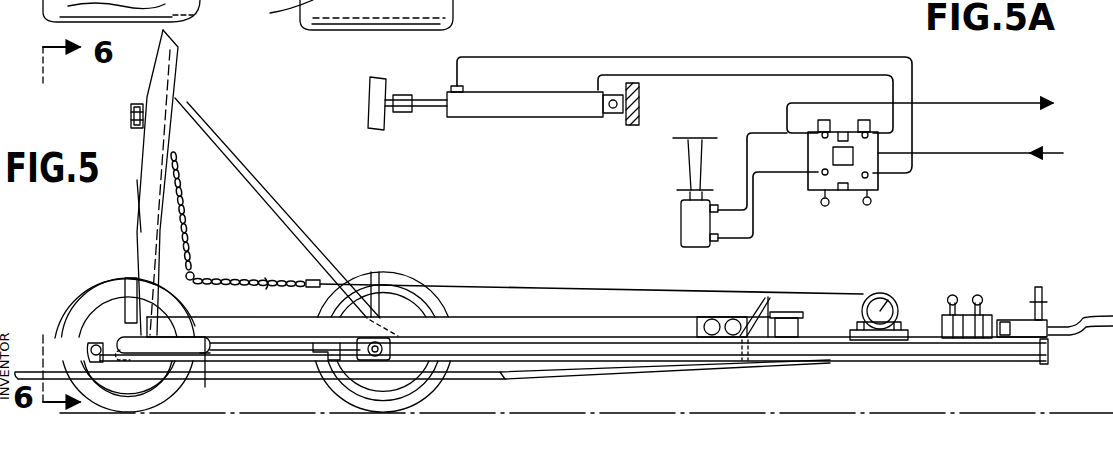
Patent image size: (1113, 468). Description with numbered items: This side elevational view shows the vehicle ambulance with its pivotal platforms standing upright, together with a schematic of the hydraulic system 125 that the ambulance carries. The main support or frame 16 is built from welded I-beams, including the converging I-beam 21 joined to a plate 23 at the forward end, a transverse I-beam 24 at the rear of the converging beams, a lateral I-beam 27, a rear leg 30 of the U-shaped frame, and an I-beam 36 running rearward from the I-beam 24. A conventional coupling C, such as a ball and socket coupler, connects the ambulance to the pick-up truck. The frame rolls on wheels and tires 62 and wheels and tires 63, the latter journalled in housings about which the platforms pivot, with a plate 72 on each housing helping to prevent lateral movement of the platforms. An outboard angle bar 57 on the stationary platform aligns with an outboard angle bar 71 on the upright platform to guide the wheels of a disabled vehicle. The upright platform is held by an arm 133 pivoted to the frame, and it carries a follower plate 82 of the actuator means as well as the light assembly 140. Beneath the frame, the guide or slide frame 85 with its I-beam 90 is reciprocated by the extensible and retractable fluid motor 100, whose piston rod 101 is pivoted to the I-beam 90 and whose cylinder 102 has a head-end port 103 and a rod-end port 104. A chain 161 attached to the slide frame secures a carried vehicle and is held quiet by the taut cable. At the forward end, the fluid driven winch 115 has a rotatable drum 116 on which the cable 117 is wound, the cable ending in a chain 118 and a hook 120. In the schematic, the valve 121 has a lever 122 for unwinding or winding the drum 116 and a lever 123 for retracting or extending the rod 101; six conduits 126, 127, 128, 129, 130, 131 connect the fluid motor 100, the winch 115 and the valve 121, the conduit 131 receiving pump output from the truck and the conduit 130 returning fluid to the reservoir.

In FIG. 5, the main support or frame 16 is at (870, 370).
In FIG. 5, the I-beam 21 is at (958, 355).
In FIG. 5, the plate 23 is at (1052, 340).
In FIG. 5, the I-beam 24 is at (755, 362).
In FIG. 5, the lateral I-beam 27 is at (500, 335).
In FIG. 5, the leg 30 is at (276, 382).
In FIG. 5, the I-beam 36 is at (542, 376).
In FIG. 5, the outboard angle bar 57 is at (608, 330).
In FIG. 5, the wheels and tires 62 is at (410, 392).
In FIG. 5, the wheels and tires 63 is at (90, 305).
In FIG. 5, the outboard angle bar 71 is at (172, 75).
In FIG. 5, the plate 72 is at (207, 364).
In FIG. 5, the plate 82 is at (140, 177).
In FIG. 5A, the guide or slide frame 85 is at (362, 105).
In FIG. 5A, the I-beam 90 is at (386, 90).
In FIG. 5A, the extensible and retractable fluid motor 100 is at (563, 128).
In FIG. 5A, the piston rod 101 is at (420, 112).
In FIG. 5A, the cylinder 102 is at (521, 110).
In FIG. 5A, the port 103 is at (597, 91).
In FIG. 5A, the port 104 is at (470, 90).
In FIG. 5, the fluid driven winch 115 is at (890, 308).
In FIG. 5A, the fluid driven winch 115 is at (680, 212).
In FIG. 5, the rotatable drum 116 is at (876, 292).
In FIG. 5A, the rotatable drum 116 is at (688, 160).
In FIG. 5, the cable 117 is at (577, 286).
In FIG. 5, the chain 118 is at (307, 282).
In FIG. 5, the hook 120 is at (273, 277).
In FIG. 5, the valve 121 is at (996, 320).
In FIG. 5A, the valve 121 is at (880, 160).
In FIG. 5, the lever 122 is at (954, 295).
In FIG. 5A, the lever 122 is at (822, 206).
In FIG. 5, the lever 123 is at (984, 295).
In FIG. 5A, the lever 123 is at (866, 206).
In FIG. 5A, the pressurized hydraulic system 125 is at (812, 50).
In FIG. 5A, the conduit 126 is at (680, 57).
In FIG. 5A, the conduit 127 is at (700, 78).
In FIG. 5A, the conduit 128 is at (768, 100).
In FIG. 5A, the conduit 129 is at (758, 219).
In FIG. 5A, the conduit 130 is at (946, 100).
In FIG. 5A, the conduit 131 is at (974, 150).
In FIG. 5, the arm 133 is at (278, 200).
In FIG. 5, the light assembly 140 is at (128, 111).
In FIG. 5, the chain 161 is at (192, 225).
In FIG. 5, the coupling C is at (1110, 305).